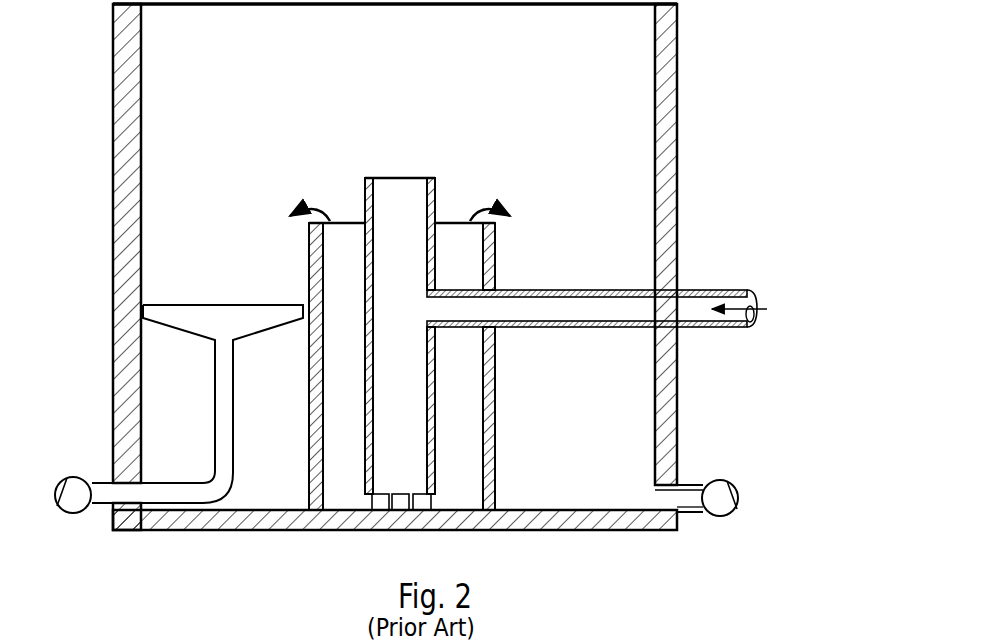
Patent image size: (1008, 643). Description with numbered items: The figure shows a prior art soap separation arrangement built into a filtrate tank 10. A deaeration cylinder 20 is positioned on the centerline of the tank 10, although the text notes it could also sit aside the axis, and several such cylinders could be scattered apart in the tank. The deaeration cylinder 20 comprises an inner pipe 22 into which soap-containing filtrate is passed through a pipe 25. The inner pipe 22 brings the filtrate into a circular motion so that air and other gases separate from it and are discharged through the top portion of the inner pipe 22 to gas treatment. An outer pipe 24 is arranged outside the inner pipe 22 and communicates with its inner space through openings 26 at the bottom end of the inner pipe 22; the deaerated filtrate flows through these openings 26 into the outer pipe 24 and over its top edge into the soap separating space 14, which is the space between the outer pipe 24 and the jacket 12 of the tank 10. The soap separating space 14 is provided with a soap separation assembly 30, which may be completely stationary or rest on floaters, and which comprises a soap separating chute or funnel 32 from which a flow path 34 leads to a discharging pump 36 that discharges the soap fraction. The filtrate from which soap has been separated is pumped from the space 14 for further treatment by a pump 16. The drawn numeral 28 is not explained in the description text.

The filtrate tank 10 is at (710, 51).
The jacket 12 is at (677, 205).
The soap separating space 14 is at (583, 485).
The pump 16 is at (738, 492).
The deaeration cylinder 20 is at (512, 384).
The inner pipe 22 is at (425, 502).
The outer pipe 24 is at (497, 447).
The pipe 25 is at (738, 291).
The openings 26 is at (435, 445).
The outer tube wall 28 is at (495, 258).
The soap separation assembly 30 is at (212, 236).
The soap separating chute or funnel 32 is at (143, 305).
The flow path 34 is at (218, 400).
The discharging pump 36 is at (70, 512).